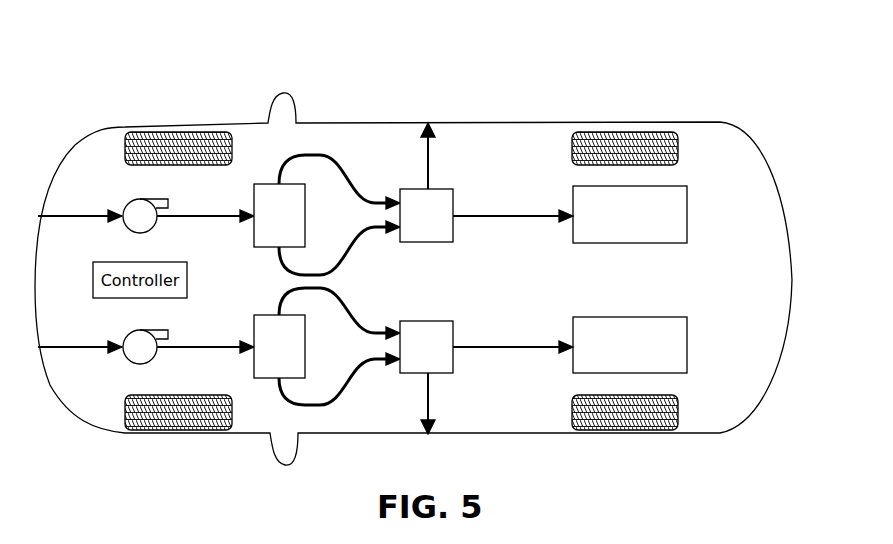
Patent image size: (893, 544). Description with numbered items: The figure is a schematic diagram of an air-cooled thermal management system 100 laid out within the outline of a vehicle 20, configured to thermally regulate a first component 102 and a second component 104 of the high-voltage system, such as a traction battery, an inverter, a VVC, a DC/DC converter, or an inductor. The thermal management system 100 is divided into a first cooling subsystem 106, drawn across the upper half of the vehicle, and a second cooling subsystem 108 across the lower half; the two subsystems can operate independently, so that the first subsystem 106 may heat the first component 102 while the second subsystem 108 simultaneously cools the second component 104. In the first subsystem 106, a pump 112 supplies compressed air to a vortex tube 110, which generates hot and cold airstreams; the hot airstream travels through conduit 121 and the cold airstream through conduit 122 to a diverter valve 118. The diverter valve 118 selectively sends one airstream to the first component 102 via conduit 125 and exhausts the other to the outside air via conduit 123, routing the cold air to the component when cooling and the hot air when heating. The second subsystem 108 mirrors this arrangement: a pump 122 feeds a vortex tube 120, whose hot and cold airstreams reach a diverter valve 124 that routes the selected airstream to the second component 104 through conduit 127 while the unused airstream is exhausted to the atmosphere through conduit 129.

The thermal management system 100 is at (368, 100).
The vehicle 20 is at (457, 122).
The first cooling subsystem 106 is at (527, 151).
The second cooling subsystem 108 is at (500, 408).
The pump 112 is at (147, 199).
The vortex tube 110 is at (254, 232).
The conduit 121 is at (350, 178).
The conduit / pump 122 is at (357, 238).
The vortex tube 120 is at (254, 331).
The diverter valve 118 is at (428, 242).
The conduit 123 is at (430, 180).
The conduit 125 is at (473, 216).
The first component 102 is at (630, 243).
The diverter valve 124 is at (430, 321).
The conduit 129 is at (430, 388).
The conduit 127 is at (478, 347).
The second component 104 is at (630, 317).